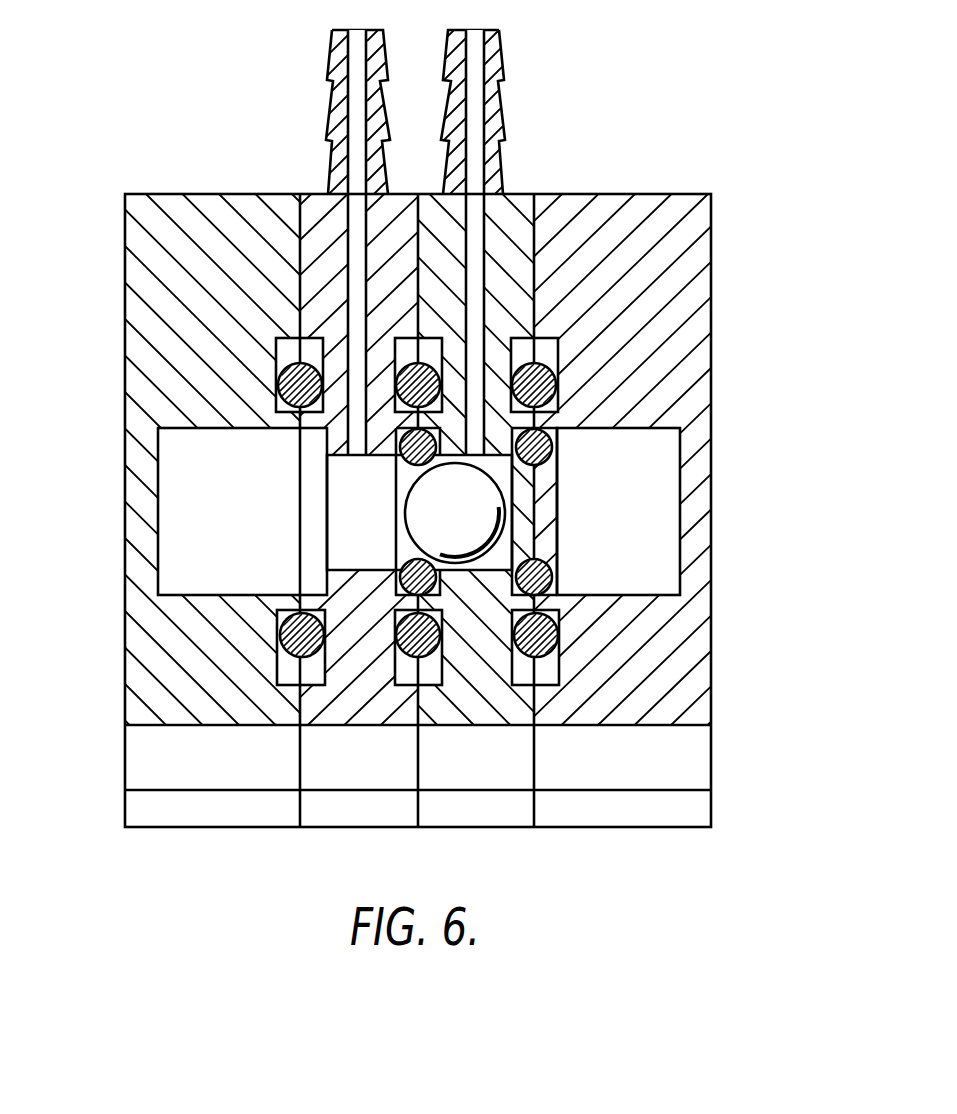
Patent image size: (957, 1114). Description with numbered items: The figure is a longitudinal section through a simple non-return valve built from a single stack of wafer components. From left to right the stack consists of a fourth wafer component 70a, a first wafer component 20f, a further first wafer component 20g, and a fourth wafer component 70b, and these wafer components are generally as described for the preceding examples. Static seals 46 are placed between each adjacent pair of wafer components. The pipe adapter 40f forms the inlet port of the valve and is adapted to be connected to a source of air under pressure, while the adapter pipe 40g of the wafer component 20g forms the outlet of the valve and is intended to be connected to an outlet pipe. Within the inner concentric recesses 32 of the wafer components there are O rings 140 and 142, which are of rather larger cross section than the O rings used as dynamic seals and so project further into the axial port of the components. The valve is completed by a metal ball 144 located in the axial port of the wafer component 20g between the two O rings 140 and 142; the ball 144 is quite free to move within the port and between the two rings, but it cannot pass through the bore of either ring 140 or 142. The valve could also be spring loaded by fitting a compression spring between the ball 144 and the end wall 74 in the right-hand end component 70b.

The pipe adapter 40f is at (335, 63).
The adapter pipe 40g is at (493, 62).
The first wafer component 20f is at (330, 178).
The first wafer component 20g is at (492, 165).
The fourth wafer component 70a is at (148, 327).
The fourth wafer component 70b is at (693, 285).
The static seal 46 is at (547, 390).
The inner concentric recess 32 is at (393, 440).
The O ring 140 is at (407, 555).
The O ring 142 is at (553, 549).
The metal ball 144 is at (482, 495).
The end wall 74 is at (692, 513).